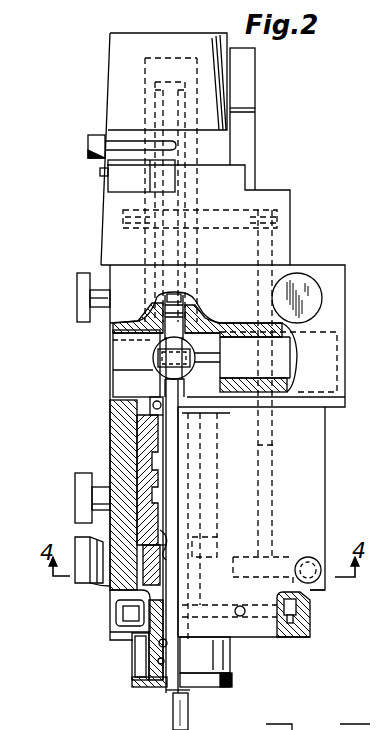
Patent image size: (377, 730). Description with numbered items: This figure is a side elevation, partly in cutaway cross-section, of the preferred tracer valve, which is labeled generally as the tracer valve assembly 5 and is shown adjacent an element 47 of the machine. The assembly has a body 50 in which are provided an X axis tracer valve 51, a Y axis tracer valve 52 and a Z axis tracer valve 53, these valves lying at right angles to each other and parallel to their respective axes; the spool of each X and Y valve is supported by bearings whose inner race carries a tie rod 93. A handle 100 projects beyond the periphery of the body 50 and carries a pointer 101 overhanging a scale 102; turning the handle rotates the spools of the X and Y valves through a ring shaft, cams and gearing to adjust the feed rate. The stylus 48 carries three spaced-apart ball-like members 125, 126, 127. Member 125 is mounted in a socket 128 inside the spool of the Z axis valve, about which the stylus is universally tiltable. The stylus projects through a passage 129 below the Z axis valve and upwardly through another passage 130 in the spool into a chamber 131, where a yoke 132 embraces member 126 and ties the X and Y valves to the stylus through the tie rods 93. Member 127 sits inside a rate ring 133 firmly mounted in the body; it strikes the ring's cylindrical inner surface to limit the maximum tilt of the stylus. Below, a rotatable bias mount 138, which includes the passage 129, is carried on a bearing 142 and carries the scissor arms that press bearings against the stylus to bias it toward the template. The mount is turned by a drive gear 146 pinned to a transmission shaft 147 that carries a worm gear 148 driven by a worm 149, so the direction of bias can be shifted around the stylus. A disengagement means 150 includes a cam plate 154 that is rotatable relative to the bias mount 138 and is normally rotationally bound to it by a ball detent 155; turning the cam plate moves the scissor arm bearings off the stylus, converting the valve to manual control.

The lever 47 is at (0, 35).
The valve assembly 5 is at (36, 423).
The stylus 48 is at (166, 700).
The body 50 is at (294, 246).
The X axis tracer valve 51 is at (250, 367).
The Y axis tracer valve 52 is at (152, 357).
The Z axis tracer valve 53 is at (150, 428).
The tie rod 93 is at (205, 362).
The handle 100 is at (117, 147).
The pointer 101 is at (88, 143).
The scale 102 is at (104, 176).
The ball-like member 125 is at (172, 538).
The ball-like member 126 is at (113, 380).
The ball-like member 127 is at (110, 338).
The socket 128 is at (110, 520).
The passage 129 is at (135, 650).
The passage 130 is at (152, 406).
The chamber 131 is at (152, 398).
The yoke 132 is at (152, 366).
The rate ring 133 is at (150, 325).
The bias mount 138 is at (230, 668).
The bearing 142 is at (112, 588).
The drive gear 146 is at (307, 628).
The transmission shaft 147 is at (275, 445).
The worm gear 148 is at (290, 562).
The worm 149 is at (318, 592).
The disengagement means 150 is at (237, 684).
The cam plate 154 is at (207, 687).
The ball detent 155 is at (150, 690).